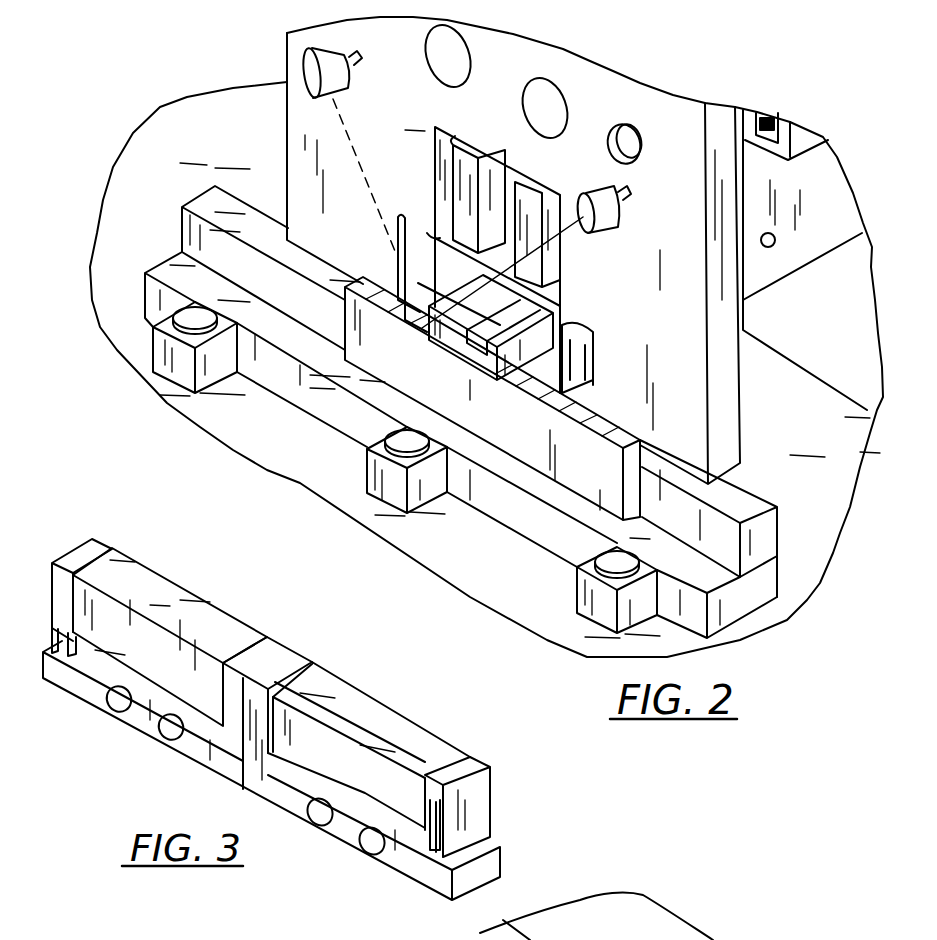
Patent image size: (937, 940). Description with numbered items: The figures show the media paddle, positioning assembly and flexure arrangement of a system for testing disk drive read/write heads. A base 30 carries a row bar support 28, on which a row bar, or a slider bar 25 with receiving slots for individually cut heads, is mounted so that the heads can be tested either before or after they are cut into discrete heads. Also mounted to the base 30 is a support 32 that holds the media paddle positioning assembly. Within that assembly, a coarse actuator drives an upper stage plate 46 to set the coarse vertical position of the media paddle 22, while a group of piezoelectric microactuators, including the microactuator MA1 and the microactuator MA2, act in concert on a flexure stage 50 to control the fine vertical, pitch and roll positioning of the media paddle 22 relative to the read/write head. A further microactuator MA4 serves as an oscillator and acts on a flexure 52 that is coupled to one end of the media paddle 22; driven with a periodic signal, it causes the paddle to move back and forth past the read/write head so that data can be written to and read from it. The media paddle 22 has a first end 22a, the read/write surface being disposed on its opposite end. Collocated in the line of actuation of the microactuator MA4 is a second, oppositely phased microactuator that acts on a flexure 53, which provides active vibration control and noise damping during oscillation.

In FIG. 2, the base 30 is at (197, 163).
In FIG. 2, the upper stage plate 46 is at (317, 152).
In FIG. 2, the microactuator MA1 is at (425, 160).
In FIG. 2, the microactuator MA2 is at (521, 185).
In FIG. 2, the microactuator MA4 is at (523, 280).
In FIG. 2, the flexure stage 50 is at (540, 307).
In FIG. 2, the flexure 52 is at (457, 349).
In FIG. 3, the flexure 52 is at (262, 652).
In FIG. 2, the first end 22a is at (408, 318).
In FIG. 2, the row bar support 28 is at (513, 510).
In FIG. 2, the slider bar 25 is at (597, 478).
In FIG. 2, the support 32 is at (815, 343).
In FIG. 3, the flexure 53 is at (270, 644).
In FIG. 3, the media paddle 22 is at (596, 916).